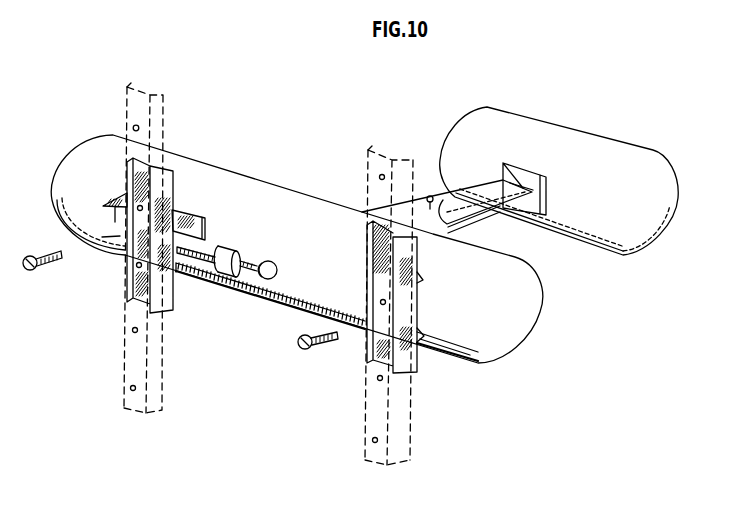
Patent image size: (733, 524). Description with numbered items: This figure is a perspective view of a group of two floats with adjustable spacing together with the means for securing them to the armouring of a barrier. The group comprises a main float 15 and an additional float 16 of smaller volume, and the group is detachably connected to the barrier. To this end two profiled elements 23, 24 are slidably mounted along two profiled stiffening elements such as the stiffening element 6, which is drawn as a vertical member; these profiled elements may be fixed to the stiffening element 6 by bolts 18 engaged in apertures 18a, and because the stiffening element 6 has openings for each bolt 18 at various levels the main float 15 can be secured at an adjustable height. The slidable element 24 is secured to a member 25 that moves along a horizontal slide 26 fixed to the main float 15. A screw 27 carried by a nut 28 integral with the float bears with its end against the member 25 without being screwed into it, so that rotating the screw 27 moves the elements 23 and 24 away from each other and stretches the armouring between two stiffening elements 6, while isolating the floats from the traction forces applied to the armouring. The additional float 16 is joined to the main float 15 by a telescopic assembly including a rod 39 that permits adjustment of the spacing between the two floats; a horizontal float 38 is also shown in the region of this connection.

The profiled stiffening element 6 is at (161, 131).
The main float 15 is at (534, 337).
The additional float 16 is at (529, 120).
The bolt 18 is at (43, 272).
The aperture 18a is at (132, 127).
The slidable profiled element 23 is at (417, 373).
The slidable profiled element 24 is at (124, 280).
The movable member 25 is at (178, 268).
The horizontal slide 26 is at (176, 227).
The screw 27 is at (267, 275).
The nut 28 is at (229, 278).
The horizontal float 38 is at (450, 204).
The rod 39 is at (455, 229).